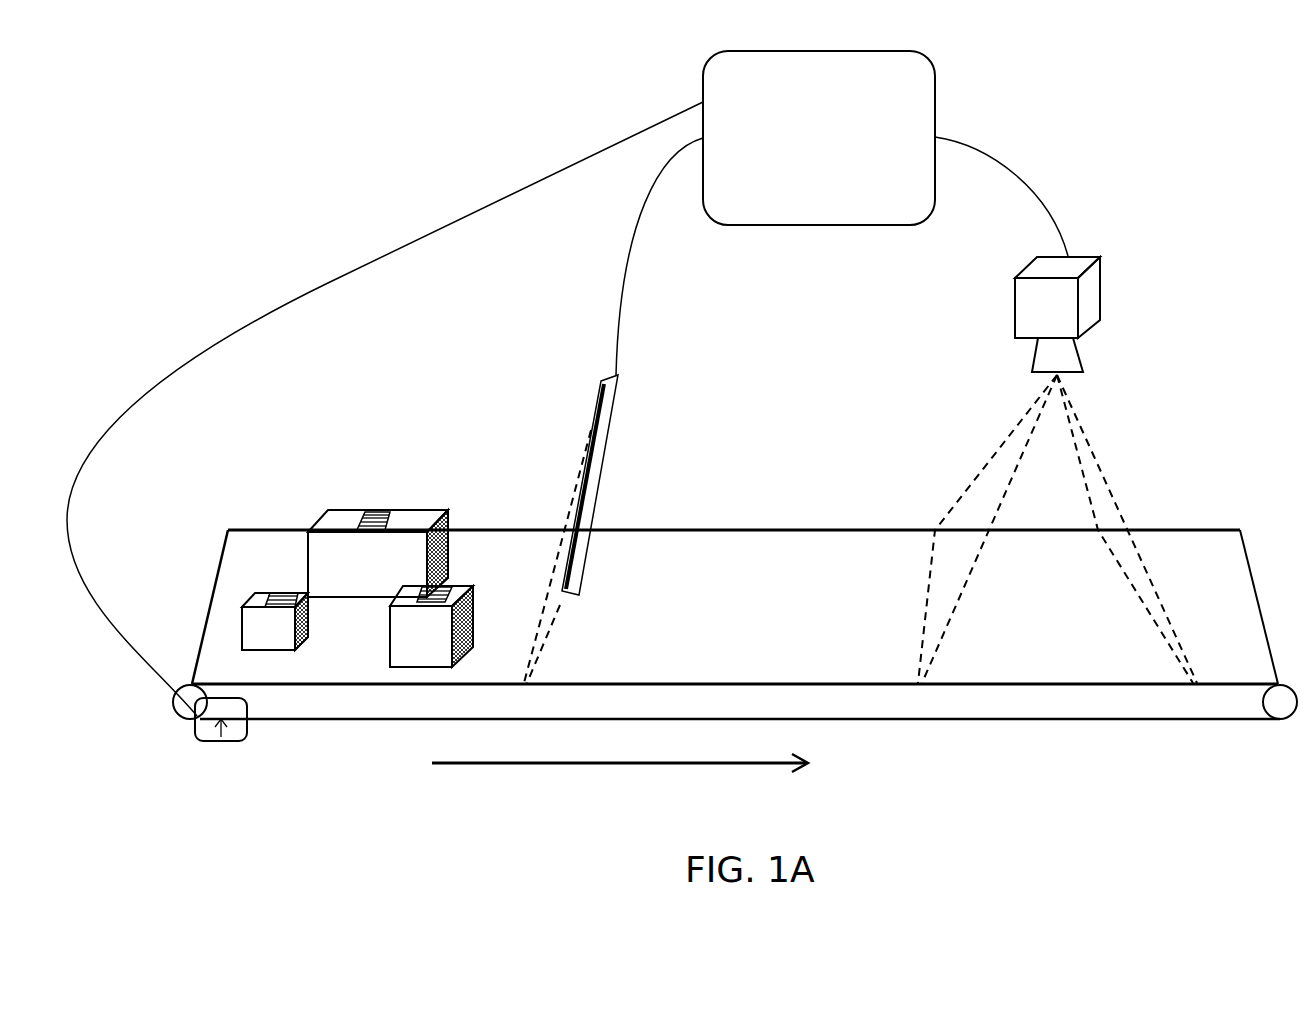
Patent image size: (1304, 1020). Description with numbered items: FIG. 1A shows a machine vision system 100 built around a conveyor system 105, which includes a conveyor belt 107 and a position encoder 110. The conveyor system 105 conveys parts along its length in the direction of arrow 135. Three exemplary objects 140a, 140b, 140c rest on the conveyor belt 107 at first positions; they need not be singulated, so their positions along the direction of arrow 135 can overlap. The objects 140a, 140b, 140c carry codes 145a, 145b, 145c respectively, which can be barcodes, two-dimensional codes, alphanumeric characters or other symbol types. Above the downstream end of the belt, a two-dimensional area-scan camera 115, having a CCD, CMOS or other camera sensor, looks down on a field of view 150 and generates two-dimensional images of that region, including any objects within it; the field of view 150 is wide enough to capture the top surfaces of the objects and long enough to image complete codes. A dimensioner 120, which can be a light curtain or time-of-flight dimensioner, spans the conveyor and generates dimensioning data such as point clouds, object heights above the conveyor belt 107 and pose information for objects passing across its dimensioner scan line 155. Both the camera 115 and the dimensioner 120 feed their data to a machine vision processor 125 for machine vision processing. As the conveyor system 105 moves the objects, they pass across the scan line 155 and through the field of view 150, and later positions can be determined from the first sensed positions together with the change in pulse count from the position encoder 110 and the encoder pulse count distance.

The machine vision system 100 is at (388, 125).
The conveyor system 105 is at (275, 550).
The conveyor belt 107 is at (256, 673).
The position encoder 110 is at (220, 742).
The two-dimensional area-scan camera 115 is at (1068, 267).
The dimensioner 120 is at (605, 388).
The machine vision processor 125 is at (819, 138).
The arrow 135 is at (620, 775).
The object 140a is at (431, 626).
The object 140b is at (378, 553).
The object 140c is at (275, 621).
The code 145a is at (432, 590).
The code 145b is at (383, 517).
The code 145c is at (288, 602).
The field of view 150 is at (983, 468).
The dimensioner scan line 155 is at (518, 667).